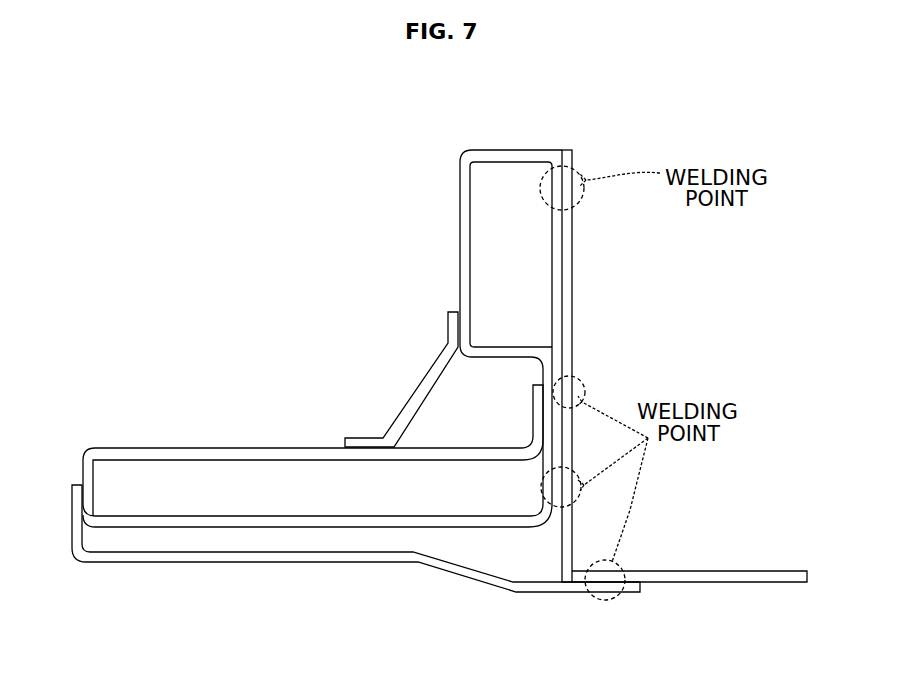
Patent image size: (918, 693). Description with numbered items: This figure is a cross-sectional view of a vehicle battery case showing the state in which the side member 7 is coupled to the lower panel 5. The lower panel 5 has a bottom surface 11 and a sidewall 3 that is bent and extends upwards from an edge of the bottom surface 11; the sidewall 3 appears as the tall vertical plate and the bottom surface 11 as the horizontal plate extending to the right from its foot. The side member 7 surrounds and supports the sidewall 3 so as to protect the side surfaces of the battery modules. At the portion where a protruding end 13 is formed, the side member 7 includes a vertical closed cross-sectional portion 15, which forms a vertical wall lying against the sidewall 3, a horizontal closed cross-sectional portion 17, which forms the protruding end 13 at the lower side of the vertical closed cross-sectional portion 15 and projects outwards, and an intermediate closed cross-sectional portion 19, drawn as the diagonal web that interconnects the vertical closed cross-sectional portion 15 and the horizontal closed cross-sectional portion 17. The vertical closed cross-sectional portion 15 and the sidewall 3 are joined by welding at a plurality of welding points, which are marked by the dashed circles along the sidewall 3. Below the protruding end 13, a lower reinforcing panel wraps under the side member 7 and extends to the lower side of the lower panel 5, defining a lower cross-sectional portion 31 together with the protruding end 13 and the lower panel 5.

The sidewall 3 is at (575, 345).
The lower panel 5 is at (684, 366).
The side member 7 is at (460, 218).
The bottom surface 11 is at (689, 525).
The protruding end 13 is at (98, 452).
The vertical closed cross-sectional portion 15 is at (520, 198).
The horizontal closed cross-sectional portion 17 is at (258, 479).
The intermediate closed cross-sectional portion 19 is at (446, 406).
The lower cross-sectional portion 31 is at (315, 548).